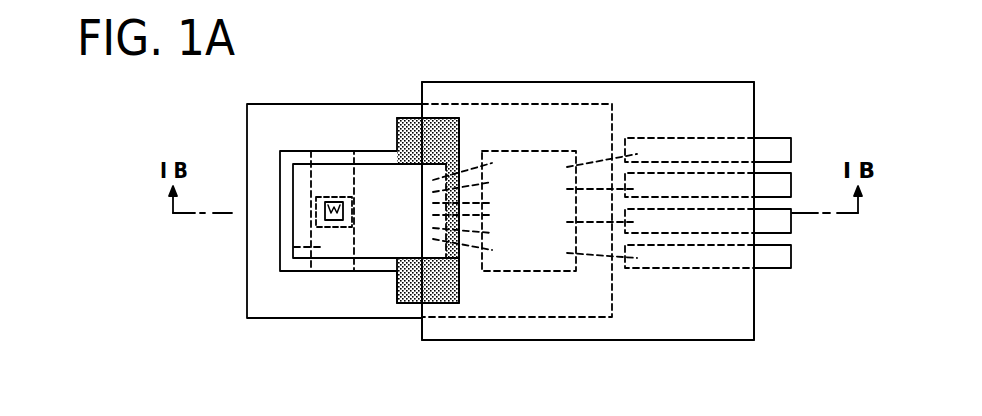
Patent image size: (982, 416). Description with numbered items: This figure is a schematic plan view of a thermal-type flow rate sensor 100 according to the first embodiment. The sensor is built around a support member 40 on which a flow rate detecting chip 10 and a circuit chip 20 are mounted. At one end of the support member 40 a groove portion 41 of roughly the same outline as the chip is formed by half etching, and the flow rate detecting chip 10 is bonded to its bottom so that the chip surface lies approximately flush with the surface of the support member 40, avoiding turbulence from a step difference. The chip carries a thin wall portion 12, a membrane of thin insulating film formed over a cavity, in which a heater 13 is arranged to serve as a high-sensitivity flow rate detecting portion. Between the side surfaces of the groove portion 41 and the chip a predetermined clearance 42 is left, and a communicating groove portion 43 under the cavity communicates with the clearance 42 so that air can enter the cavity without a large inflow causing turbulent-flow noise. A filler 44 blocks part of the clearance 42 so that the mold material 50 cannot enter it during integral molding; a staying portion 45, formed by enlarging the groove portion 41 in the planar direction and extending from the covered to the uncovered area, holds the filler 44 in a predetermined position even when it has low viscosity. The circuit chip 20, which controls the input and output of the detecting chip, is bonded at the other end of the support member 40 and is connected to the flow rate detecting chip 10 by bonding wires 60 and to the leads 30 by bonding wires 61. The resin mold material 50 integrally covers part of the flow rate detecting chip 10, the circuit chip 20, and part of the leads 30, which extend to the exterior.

The thermal-type flow rate sensor 100 is at (768, 86).
The flow rate detecting chip 10 is at (302, 173).
The thin wall portion 12 is at (328, 197).
The heater 13 is at (336, 218).
The circuit chip 20 is at (524, 167).
The leads 30 is at (783, 152).
The support member 40 is at (296, 294).
The groove portion 41 is at (280, 195).
The clearance 42 is at (373, 157).
The communicating groove portion 43 is at (293, 247).
The filler 44 is at (397, 300).
The staying portion 45 is at (403, 118).
The mold material 50 is at (642, 100).
The bonding wires 60 is at (468, 250).
The bonding wires 61 is at (592, 255).